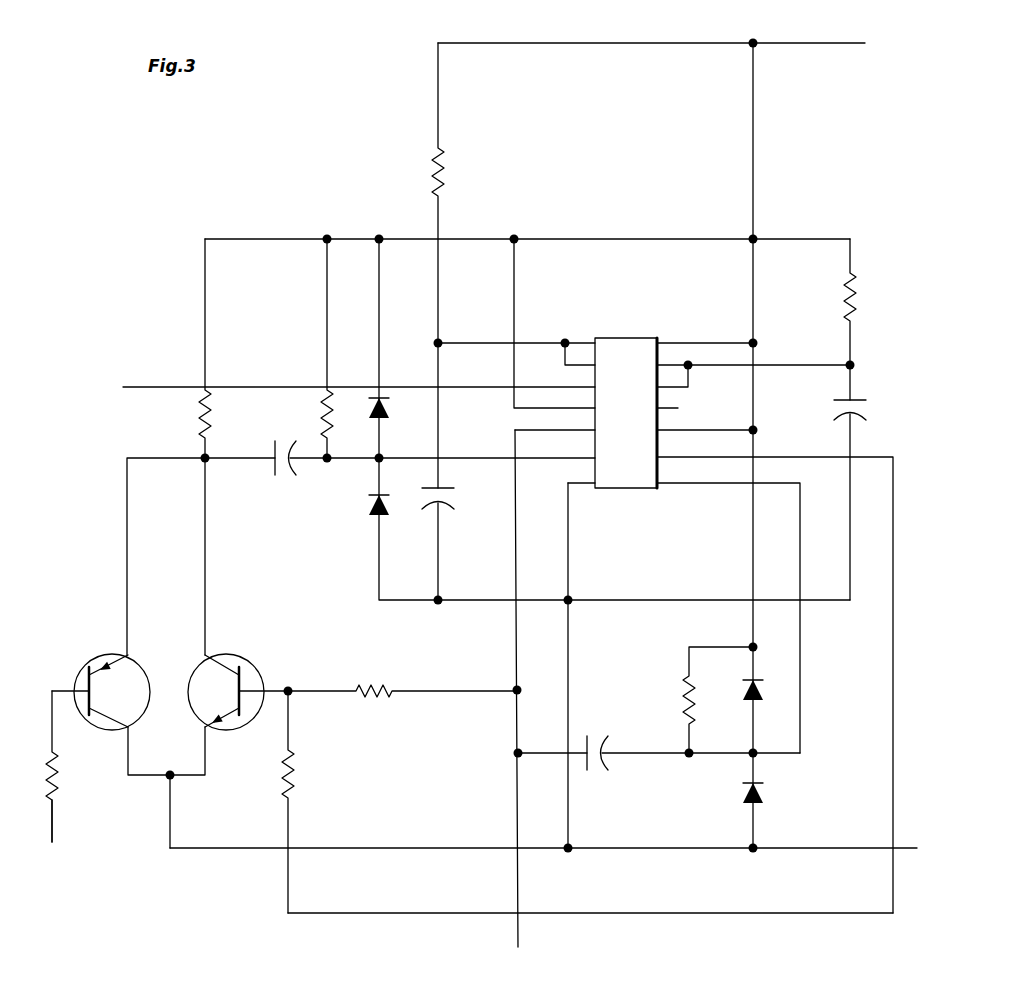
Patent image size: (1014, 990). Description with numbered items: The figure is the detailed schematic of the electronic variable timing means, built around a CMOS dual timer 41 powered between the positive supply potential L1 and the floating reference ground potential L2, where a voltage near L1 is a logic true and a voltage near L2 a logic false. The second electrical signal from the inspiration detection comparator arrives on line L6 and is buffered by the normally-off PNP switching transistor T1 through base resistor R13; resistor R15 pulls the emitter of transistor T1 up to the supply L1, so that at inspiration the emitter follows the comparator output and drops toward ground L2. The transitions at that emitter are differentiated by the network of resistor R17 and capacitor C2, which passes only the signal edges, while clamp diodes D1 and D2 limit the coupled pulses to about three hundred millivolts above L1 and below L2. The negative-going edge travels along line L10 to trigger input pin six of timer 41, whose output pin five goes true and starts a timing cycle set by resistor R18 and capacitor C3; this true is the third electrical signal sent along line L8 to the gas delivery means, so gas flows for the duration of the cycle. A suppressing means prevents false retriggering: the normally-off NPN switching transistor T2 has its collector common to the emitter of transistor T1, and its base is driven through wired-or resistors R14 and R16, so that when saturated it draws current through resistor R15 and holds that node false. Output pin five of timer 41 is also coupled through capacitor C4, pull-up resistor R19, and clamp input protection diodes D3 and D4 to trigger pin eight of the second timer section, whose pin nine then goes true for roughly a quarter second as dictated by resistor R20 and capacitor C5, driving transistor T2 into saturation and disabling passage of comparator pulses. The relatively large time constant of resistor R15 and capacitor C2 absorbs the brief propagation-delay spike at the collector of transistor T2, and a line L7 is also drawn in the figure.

The CMOS integrated circuit dual timer 41 is at (627, 337).
The PNP switching transistor T1 is at (101, 688).
The NPN switching transistor T2 is at (235, 693).
The base resistor R13 is at (74, 766).
The base resistor R14 is at (309, 802).
The resistor R15 is at (223, 351).
The base resistor R16 is at (402, 681).
The resistor R17 is at (346, 351).
The resistor R18 is at (458, 265).
The pull-up resistor R19 is at (718, 700).
The resistor R20 is at (868, 319).
The capacitor C2 is at (283, 475).
The capacitor C3 is at (453, 534).
The capacitor C4 is at (659, 738).
The capacitor C5 is at (865, 489).
The clamp diode D1 is at (394, 411).
The clamp diode D2 is at (390, 517).
The clamp input protection diode D3 is at (769, 693).
The clamp input protection diode D4 is at (772, 796).
The positive supply potential line L1 is at (651, 55).
The floating reference ground potential line L2 is at (549, 859).
The line L6 is at (65, 830).
The line L7 is at (350, 401).
The line L8 is at (590, 934).
The line L10 is at (361, 556).